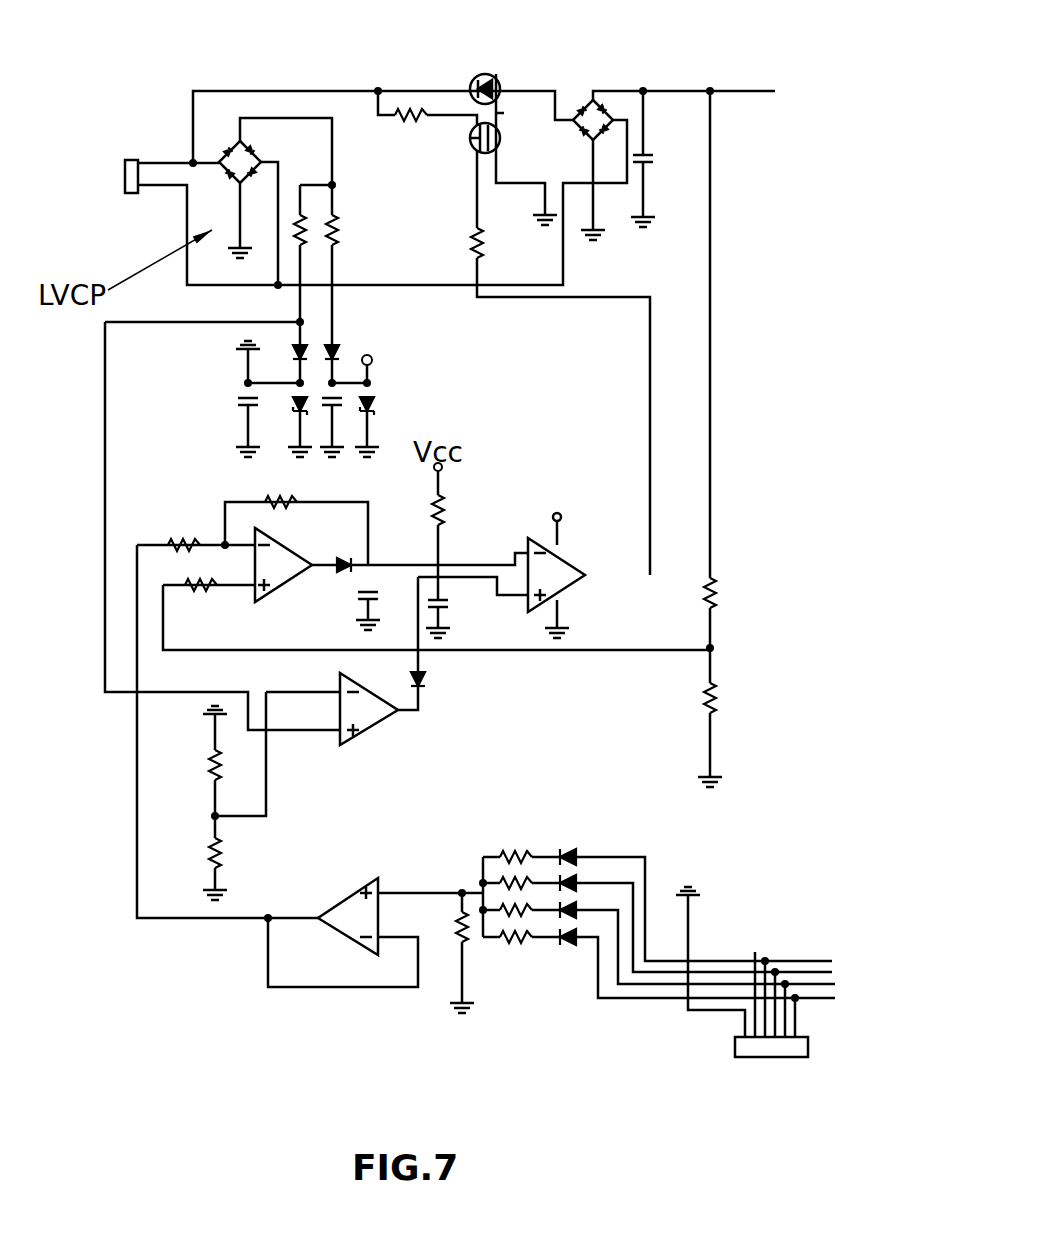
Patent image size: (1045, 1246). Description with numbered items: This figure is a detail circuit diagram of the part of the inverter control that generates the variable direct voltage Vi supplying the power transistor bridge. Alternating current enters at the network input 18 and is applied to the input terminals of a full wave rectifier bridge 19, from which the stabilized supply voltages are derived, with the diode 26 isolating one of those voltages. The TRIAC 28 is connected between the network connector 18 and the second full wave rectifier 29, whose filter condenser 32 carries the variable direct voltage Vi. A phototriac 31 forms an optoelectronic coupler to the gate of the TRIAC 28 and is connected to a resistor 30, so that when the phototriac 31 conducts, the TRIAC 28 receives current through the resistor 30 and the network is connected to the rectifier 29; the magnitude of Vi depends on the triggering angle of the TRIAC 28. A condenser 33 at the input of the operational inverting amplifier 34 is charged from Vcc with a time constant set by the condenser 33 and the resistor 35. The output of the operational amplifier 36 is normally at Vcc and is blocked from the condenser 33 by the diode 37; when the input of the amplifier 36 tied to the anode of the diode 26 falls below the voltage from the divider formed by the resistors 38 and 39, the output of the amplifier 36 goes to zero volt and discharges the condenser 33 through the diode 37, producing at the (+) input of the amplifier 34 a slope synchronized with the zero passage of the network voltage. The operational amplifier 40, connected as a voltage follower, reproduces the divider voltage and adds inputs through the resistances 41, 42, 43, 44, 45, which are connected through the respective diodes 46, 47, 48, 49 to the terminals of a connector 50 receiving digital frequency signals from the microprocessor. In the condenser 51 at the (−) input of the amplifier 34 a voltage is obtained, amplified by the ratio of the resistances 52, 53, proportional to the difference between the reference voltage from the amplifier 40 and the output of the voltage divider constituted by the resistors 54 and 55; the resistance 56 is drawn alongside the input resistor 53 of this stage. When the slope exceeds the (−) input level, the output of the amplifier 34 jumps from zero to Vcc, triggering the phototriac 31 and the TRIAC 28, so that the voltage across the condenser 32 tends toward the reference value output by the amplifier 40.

The input from the alternating current network 18 is at (120, 166).
The full wave rectifier bridge 19 is at (222, 160).
The diode 26 is at (303, 347).
The TRIAC 28 is at (493, 74).
The full wave rectifier 29 is at (600, 108).
The resistor 30 is at (408, 114).
The phototriac 31 is at (500, 138).
The filter condenser 32 is at (652, 157).
The condenser 33 is at (445, 604).
The operational inverting amplifier 34 is at (560, 575).
The resistor 35 is at (445, 502).
The operational amplifier 36 is at (365, 715).
The diode 37 is at (428, 678).
The resistor 38 is at (203, 755).
The resistor 39 is at (203, 852).
The operational amplifier 40 is at (340, 925).
The resistance 41 is at (455, 925).
The resistance 42 is at (520, 857).
The resistance 43 is at (505, 883).
The resistance 44 is at (530, 912).
The resistance 45 is at (512, 945).
The diode 46 is at (570, 855).
The diode 47 is at (572, 882).
The diode 48 is at (575, 908).
The diode 49 is at (575, 945).
The connector 50 is at (780, 1047).
The condenser 51 is at (356, 594).
The resistance 52 is at (270, 500).
The resistance 53 is at (180, 545).
The resistor 54 is at (718, 592).
The resistor 55 is at (718, 700).
The resistor 56 is at (200, 587).